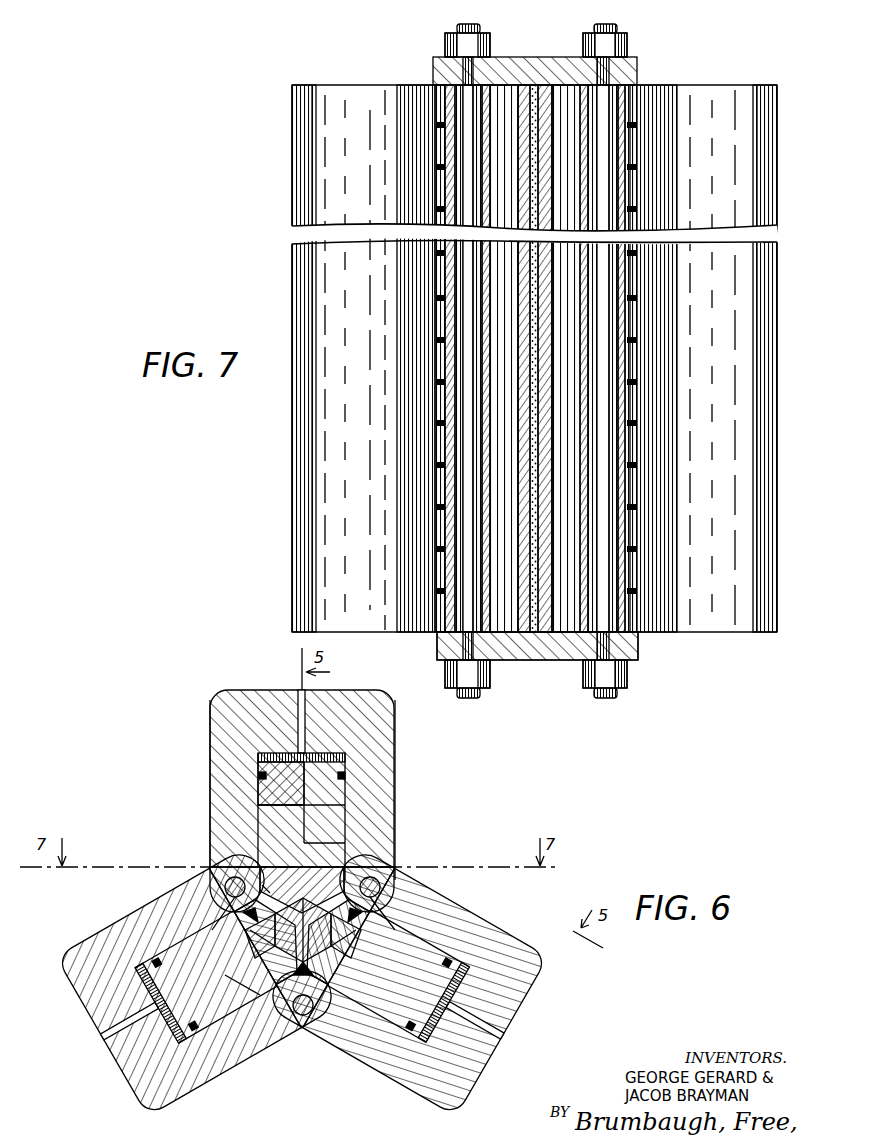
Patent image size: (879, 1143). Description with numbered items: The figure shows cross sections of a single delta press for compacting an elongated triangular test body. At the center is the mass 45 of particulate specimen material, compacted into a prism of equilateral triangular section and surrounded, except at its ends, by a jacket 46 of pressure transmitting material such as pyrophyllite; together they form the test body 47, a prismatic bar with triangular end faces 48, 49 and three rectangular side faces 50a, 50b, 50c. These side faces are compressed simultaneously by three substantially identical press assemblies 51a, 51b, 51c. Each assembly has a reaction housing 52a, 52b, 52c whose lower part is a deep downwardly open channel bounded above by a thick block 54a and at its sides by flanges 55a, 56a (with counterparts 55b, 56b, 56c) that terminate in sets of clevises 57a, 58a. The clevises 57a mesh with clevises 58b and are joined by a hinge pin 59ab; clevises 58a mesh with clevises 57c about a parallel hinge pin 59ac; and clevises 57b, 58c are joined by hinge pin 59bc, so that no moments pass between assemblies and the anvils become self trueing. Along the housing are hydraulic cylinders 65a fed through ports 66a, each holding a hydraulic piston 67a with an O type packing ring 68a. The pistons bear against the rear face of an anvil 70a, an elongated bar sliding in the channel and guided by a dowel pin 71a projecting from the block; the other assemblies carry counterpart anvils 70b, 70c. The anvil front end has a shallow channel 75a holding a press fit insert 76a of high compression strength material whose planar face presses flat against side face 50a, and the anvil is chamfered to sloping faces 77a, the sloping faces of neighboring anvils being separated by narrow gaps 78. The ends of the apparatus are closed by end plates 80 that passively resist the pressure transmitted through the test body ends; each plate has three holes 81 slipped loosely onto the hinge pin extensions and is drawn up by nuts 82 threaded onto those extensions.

In FIG. 7, the mass of particulate specimen material 45 is at (540, 85).
In FIG. 6, the mass of particulate specimen material 45 is at (317, 930).
In FIG. 7, the jacket 46 is at (524, 88).
In FIG. 6, the jacket 46 is at (264, 943).
In FIG. 7, the test body 47 is at (540, 385).
In FIG. 6, the test body 47 is at (312, 910).
In FIG. 7, the end face 48 is at (549, 88).
In FIG. 7, the end face 49 is at (544, 661).
In FIG. 6, the side face 50a is at (302, 890).
In FIG. 6, the side face 50b is at (337, 950).
In FIG. 6, the side face 50c is at (266, 940).
In FIG. 6, the press assembly 51a is at (414, 775).
In FIG. 7, the press assembly 51b is at (785, 284).
In FIG. 6, the press assembly 51b is at (494, 919).
In FIG. 7, the press assembly 51c is at (284, 280).
In FIG. 6, the press assembly 51c is at (99, 920).
In FIG. 6, the reaction housing 52a is at (272, 700).
In FIG. 7, the reaction housing 52b is at (775, 388).
In FIG. 6, the reaction housing 52b is at (540, 977).
In FIG. 7, the reaction housing 52c is at (312, 452).
In FIG. 6, the reaction housing 52c is at (170, 1092).
In FIG. 6, the block 54a is at (372, 700).
In FIG. 6, the flange 55a is at (395, 810).
In FIG. 6, the flange 55b is at (393, 1082).
In FIG. 6, the flange 56a is at (215, 810).
In FIG. 6, the flange 56b is at (448, 923).
In FIG. 6, the flange 56c is at (218, 1090).
In FIG. 7, the clevises 57a is at (640, 567).
In FIG. 6, the clevises 57a is at (400, 881).
In FIG. 6, the clevises 57b is at (285, 1022).
In FIG. 7, the clevises 57c is at (456, 620).
In FIG. 6, the clevises 57c is at (217, 927).
In FIG. 7, the clevises 58a is at (455, 572).
In FIG. 6, the clevises 58a is at (225, 894).
In FIG. 7, the clevises 58b is at (585, 610).
In FIG. 6, the clevises 58b is at (386, 923).
In FIG. 6, the clevises 58c is at (242, 987).
In FIG. 7, the hinge pin 59ab is at (605, 699).
In FIG. 6, the hinge pin 59ab is at (375, 880).
In FIG. 7, the hinge pin 59ac is at (470, 699).
In FIG. 6, the hinge pin 59ac is at (230, 880).
In FIG. 6, the hinge pin 59bc is at (305, 1018).
In FIG. 6, the hydraulic cylinder 65a is at (345, 757).
In FIG. 6, the port 66a is at (318, 703).
In FIG. 6, the hydraulic piston 67a is at (259, 778).
In FIG. 6, the O type packing ring 68a is at (345, 778).
In FIG. 6, the anvil 70a is at (270, 827).
In FIG. 6, the anvil 70b is at (245, 1032).
In FIG. 6, the anvil 70c is at (365, 1032).
In FIG. 6, the dowel pin 71a is at (250, 874).
In FIG. 6, the channel 75a is at (291, 856).
In FIG. 6, the insert 76a is at (267, 894).
In FIG. 6, the sloping face 77a is at (334, 856).
In FIG. 6, the gap 78 is at (301, 951).
In FIG. 7, the end plate 80 is at (492, 67).
In FIG. 6, the end plate 80 is at (360, 949).
In FIG. 7, the hole 81 is at (433, 70).
In FIG. 7, the nut 82 is at (446, 45).